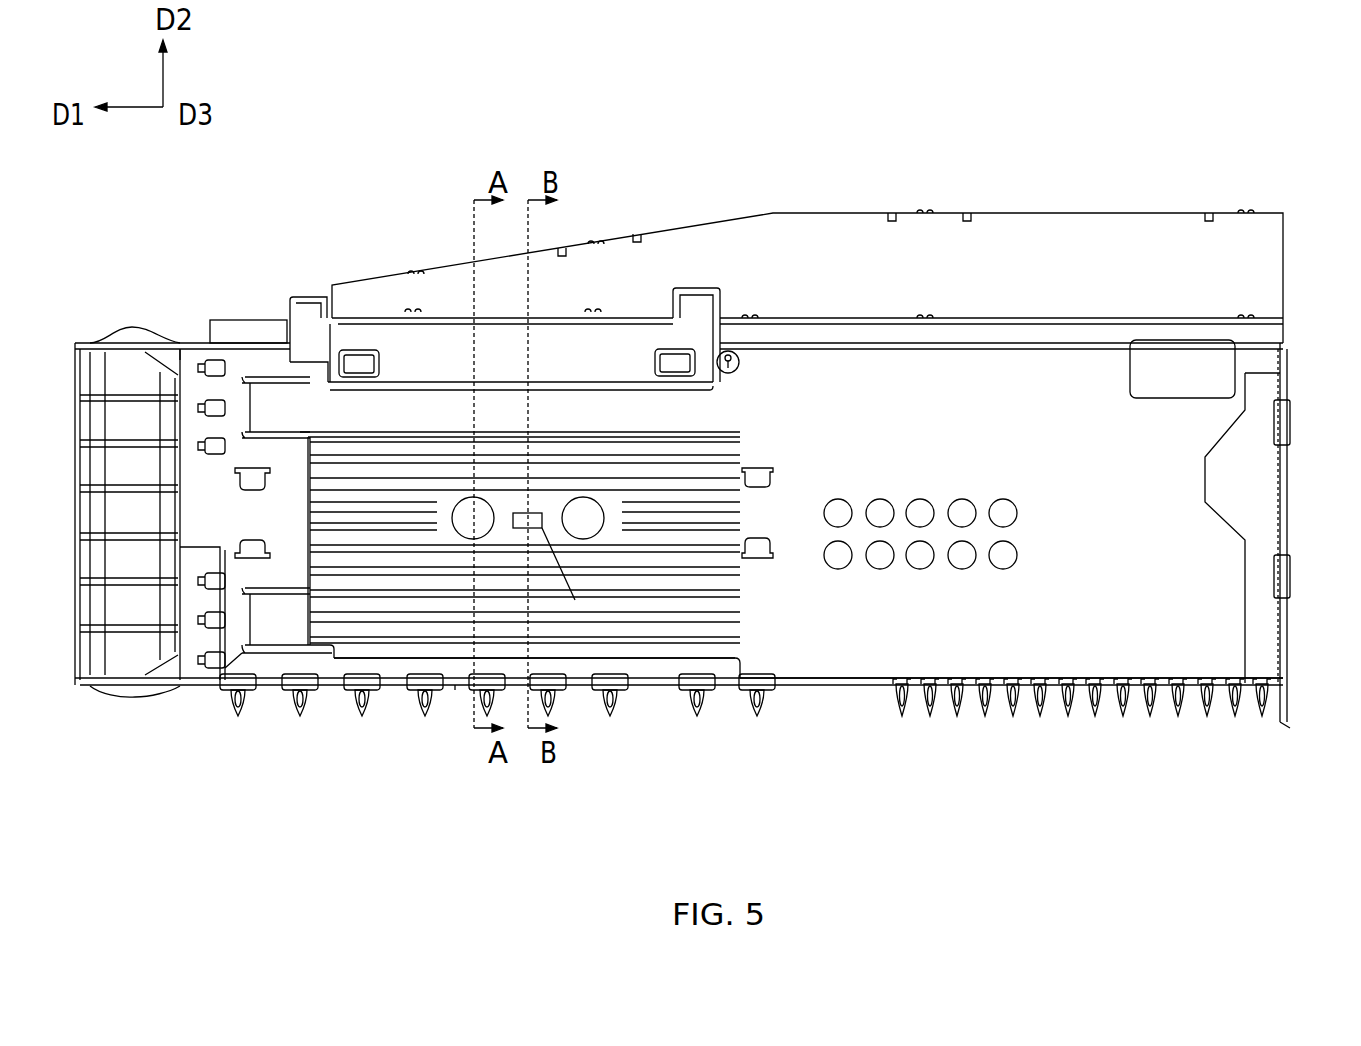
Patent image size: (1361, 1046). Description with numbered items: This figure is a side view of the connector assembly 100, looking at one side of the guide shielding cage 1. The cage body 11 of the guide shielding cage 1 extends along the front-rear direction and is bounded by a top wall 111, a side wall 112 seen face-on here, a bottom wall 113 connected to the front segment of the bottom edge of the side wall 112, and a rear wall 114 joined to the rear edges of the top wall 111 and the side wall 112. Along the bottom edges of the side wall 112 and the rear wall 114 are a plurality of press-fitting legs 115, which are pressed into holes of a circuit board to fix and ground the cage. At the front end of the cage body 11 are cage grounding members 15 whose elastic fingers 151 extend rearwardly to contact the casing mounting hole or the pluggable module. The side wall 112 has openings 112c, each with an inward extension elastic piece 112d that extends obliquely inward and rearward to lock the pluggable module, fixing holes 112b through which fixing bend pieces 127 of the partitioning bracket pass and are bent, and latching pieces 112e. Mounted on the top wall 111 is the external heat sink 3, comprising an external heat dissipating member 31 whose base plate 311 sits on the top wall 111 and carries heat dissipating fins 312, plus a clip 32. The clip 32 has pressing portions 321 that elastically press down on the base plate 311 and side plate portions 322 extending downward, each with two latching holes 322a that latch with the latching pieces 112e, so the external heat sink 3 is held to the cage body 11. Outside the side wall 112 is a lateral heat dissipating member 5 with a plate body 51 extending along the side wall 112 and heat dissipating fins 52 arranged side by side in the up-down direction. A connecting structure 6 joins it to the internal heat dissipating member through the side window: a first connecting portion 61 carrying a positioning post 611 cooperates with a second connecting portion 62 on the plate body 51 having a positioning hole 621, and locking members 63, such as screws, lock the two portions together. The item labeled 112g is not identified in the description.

The connector assembly 100 is at (430, 87).
The guide shielding cage 1 is at (708, 514).
The cage body 11 is at (708, 496).
The top wall 111 is at (182, 343).
The side wall 112 is at (995, 660).
The fixing hole 112b is at (760, 468).
The opening 112c is at (228, 658).
The inward extension elastic piece 112d is at (270, 630).
The latching piece 112e is at (359, 366).
The ventilation holes 112g is at (1003, 499).
The bottom wall 113 is at (455, 690).
The rear wall 114 is at (1290, 494).
The press-fitting leg 115 is at (697, 714).
The fixing bend piece 127 is at (765, 480).
The cage grounding member 15 is at (123, 449).
The elastic finger 151 is at (137, 365).
The external heat sink 3 is at (776, 234).
The external heat dissipating member 31 is at (807, 227).
The base plate 311 is at (243, 325).
The heat dissipating fin 312 is at (800, 230).
The clip 32 is at (525, 287).
The pressing portion 321 is at (314, 297).
The side plate portion 322 is at (515, 289).
The latching hole 322a is at (381, 360).
The lateral heat dissipating member 5 is at (573, 557).
The plate body 51 is at (742, 604).
The heat dissipating fin 52 is at (742, 642).
The connecting structure 6 is at (582, 585).
The first connecting portion 61 is at (569, 462).
The positioning post 611 is at (538, 512).
The second connecting portion 62 is at (603, 652).
The positioning hole 621 is at (540, 530).
The locking member 63 is at (463, 497).